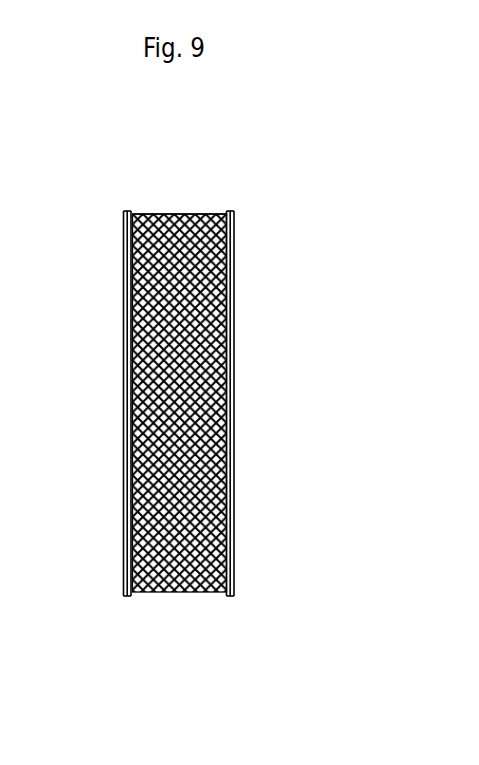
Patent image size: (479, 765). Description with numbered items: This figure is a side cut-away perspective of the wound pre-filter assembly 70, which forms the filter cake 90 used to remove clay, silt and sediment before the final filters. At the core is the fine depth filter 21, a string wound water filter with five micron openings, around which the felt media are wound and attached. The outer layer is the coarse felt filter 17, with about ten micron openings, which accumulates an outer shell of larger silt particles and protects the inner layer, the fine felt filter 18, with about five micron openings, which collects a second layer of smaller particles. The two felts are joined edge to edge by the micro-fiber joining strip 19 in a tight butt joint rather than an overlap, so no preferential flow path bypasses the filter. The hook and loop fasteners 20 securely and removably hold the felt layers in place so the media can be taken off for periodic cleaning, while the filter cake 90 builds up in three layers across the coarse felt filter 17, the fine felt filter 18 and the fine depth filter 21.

The coarse felt filter 17 is at (232, 372).
The fine felt filter 18 is at (228, 333).
The micro-fiber joining strip 19 is at (232, 296).
The hook and loop fastener 20 is at (235, 261).
The fine depth filter 21 is at (177, 218).
The panel 70 is at (333, 241).
The filter cake 90 is at (117, 618).